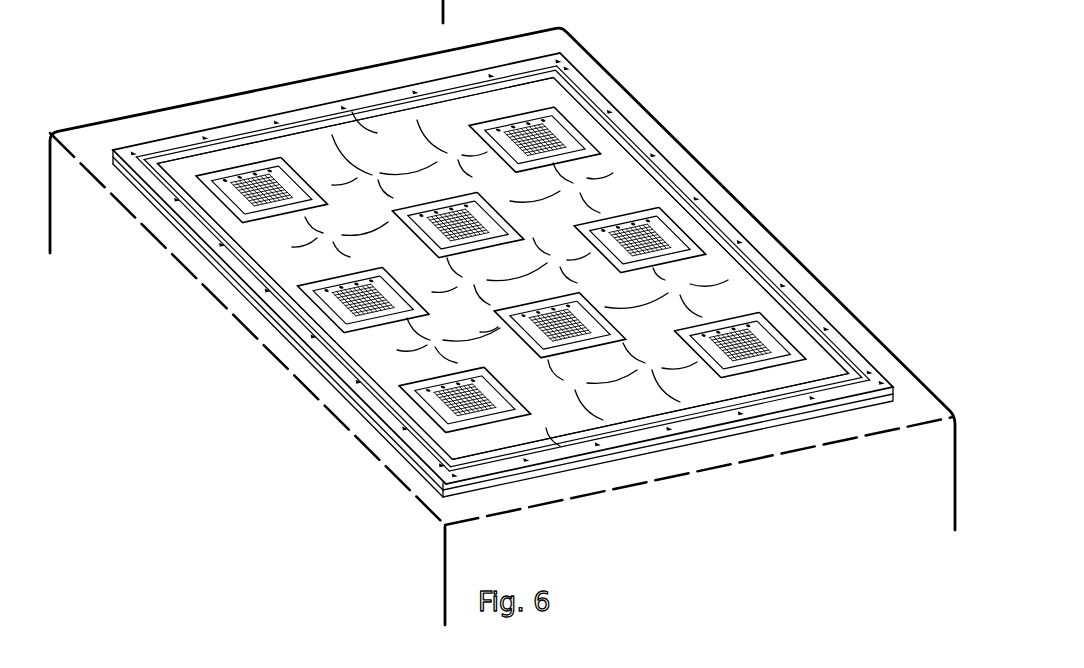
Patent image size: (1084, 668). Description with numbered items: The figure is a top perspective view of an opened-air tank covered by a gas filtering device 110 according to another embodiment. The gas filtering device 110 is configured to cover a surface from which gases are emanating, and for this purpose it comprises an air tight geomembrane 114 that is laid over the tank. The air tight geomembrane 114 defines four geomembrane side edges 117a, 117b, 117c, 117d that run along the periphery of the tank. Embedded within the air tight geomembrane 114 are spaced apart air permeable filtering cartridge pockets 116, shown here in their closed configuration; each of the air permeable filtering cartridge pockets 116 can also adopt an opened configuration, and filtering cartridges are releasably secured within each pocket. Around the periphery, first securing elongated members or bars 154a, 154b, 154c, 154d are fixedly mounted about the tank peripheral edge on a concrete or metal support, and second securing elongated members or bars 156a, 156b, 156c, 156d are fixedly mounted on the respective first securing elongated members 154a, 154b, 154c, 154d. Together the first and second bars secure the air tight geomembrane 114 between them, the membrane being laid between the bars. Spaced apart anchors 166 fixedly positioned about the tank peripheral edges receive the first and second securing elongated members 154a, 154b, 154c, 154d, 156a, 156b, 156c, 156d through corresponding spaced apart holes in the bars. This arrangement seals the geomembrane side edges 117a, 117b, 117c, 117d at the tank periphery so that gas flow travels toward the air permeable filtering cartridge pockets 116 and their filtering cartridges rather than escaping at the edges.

The gas filtering device 110 is at (724, 112).
The air tight geomembrane 114 is at (733, 292).
The air permeable filtering cartridge pockets 116 is at (248, 175).
The geomembrane side edge 117a is at (555, 435).
The geomembrane side edge 117b is at (620, 153).
The geomembrane side edge 117c is at (375, 127).
The geomembrane side edge 117d is at (262, 260).
The first securing elongated member 154a is at (687, 447).
The first securing elongated member 154b is at (703, 197).
The first securing elongated member 154c is at (366, 94).
The first securing elongated member 154d is at (388, 437).
The second securing elongated member 156a is at (780, 407).
The second securing elongated member 156b is at (720, 221).
The second securing elongated member 156c is at (341, 81).
The second securing elongated member 156d is at (333, 355).
The anchors 166 is at (170, 207).